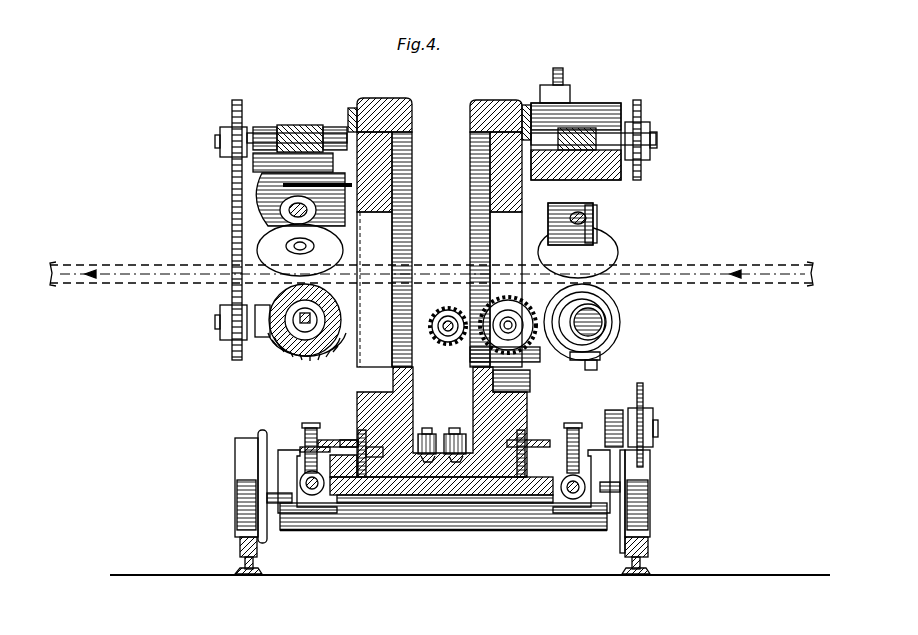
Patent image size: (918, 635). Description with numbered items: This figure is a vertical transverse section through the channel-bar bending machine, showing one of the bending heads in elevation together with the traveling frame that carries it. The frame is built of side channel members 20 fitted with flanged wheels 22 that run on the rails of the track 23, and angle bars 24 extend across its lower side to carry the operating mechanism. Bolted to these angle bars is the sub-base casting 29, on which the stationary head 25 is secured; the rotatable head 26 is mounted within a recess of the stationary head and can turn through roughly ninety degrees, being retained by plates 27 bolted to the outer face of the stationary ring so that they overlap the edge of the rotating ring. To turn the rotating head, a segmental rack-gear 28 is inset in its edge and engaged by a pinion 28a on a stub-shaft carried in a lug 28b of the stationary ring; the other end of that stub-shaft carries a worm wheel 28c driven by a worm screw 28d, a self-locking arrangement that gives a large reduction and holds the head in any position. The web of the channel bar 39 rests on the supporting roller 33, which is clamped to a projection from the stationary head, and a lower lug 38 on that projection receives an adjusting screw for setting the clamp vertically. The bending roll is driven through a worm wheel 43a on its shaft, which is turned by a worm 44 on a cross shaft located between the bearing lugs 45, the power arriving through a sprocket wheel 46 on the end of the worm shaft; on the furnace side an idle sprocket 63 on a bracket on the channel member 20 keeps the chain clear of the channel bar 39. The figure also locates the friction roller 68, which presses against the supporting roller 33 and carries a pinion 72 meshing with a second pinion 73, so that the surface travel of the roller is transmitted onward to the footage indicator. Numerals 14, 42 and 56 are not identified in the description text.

The pinion gear 14 is at (432, 334).
The side channel member 20 is at (300, 513).
The flanged wheel 22 is at (235, 480).
The track 23 is at (245, 554).
The angle bar 24 is at (487, 528).
The stationary head 25 is at (470, 106).
The rotatable head 26 is at (470, 146).
The plate 27 is at (351, 108).
The segmental rack-gear 28 is at (364, 424).
The pinion 28a is at (355, 440).
The lug 28b is at (553, 440).
The worm wheel 28c is at (303, 437).
The worm screw 28d is at (267, 498).
The sub-base casting 29 is at (430, 495).
The supporting roller 33 is at (277, 293).
The lower lug 38 is at (597, 368).
The channel bar 39 is at (111, 289).
The disc 42 is at (260, 252).
The worm wheel 43a is at (270, 188).
The worm 44 is at (280, 145).
The bearing lug 45 is at (330, 126).
The sprocket wheel 46 is at (243, 110).
The adjusting screw 56 is at (560, 70).
The idle sprocket 63 is at (643, 396).
The friction roller 68 is at (568, 327).
The pinion 72 is at (482, 354).
The pinion 73 is at (461, 336).